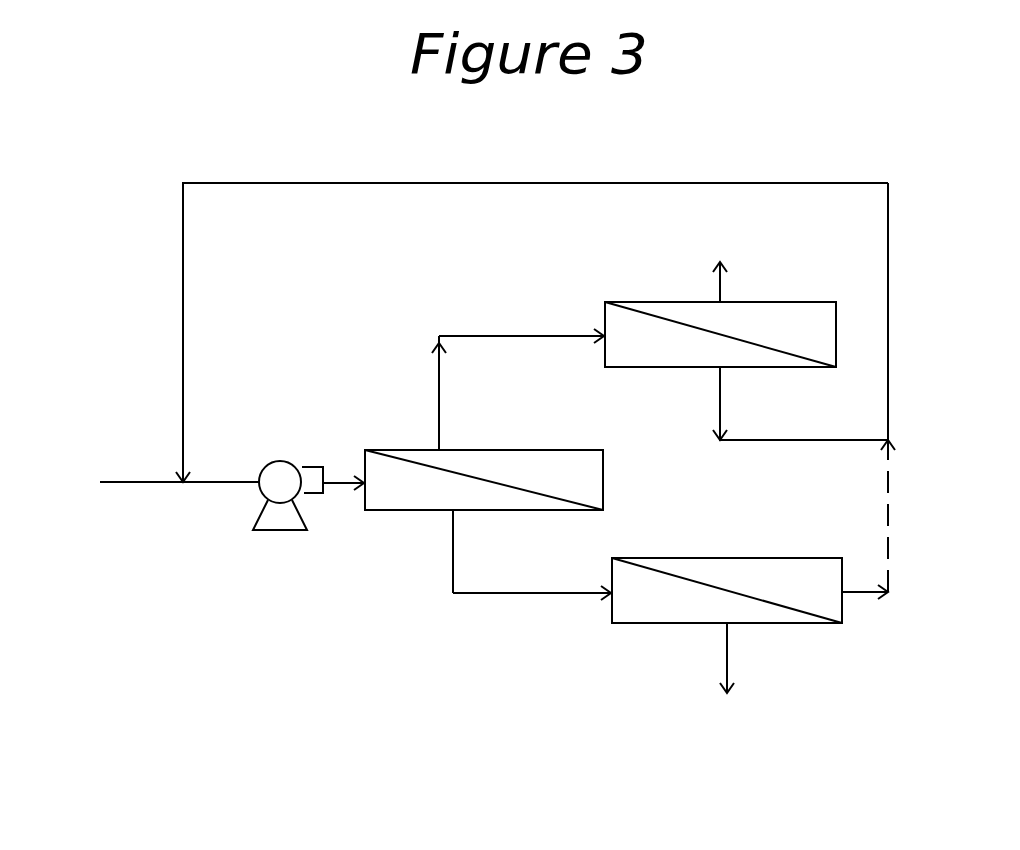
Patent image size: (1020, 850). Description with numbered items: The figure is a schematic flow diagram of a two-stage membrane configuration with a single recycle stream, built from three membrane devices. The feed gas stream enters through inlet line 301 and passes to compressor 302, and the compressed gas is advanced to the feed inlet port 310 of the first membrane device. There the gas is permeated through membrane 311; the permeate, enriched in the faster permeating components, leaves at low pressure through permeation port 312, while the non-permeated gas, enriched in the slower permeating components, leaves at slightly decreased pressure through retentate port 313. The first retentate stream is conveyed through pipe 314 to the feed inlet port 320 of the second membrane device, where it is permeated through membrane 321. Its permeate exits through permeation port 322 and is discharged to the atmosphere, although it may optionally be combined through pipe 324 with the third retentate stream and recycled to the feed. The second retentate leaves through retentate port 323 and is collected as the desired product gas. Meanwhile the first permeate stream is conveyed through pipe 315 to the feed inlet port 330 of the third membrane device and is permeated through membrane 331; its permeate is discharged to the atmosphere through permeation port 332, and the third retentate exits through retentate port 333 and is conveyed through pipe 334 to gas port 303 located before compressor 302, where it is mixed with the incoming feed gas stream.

The inlet line 301 is at (155, 483).
The compressor 302 is at (288, 496).
The gas port 303 is at (532, 320).
The feed inlet port 310 is at (343, 496).
The membrane 311 is at (484, 480).
The permeation port 312 is at (455, 393).
The retentate port 313 is at (474, 551).
The pipe 314 is at (452, 565).
The pipe 315 is at (438, 367).
The feed inlet port 320 is at (532, 585).
The membrane 321 is at (727, 590).
The permeation port 322 is at (865, 604).
The retentate port 323 is at (724, 700).
The pipe 324 is at (887, 495).
The feed inlet port 330 is at (521, 327).
The membrane 331 is at (720, 334).
The permeation port 332 is at (739, 282).
The retentate port 333 is at (804, 408).
The pipe 334 is at (887, 358).